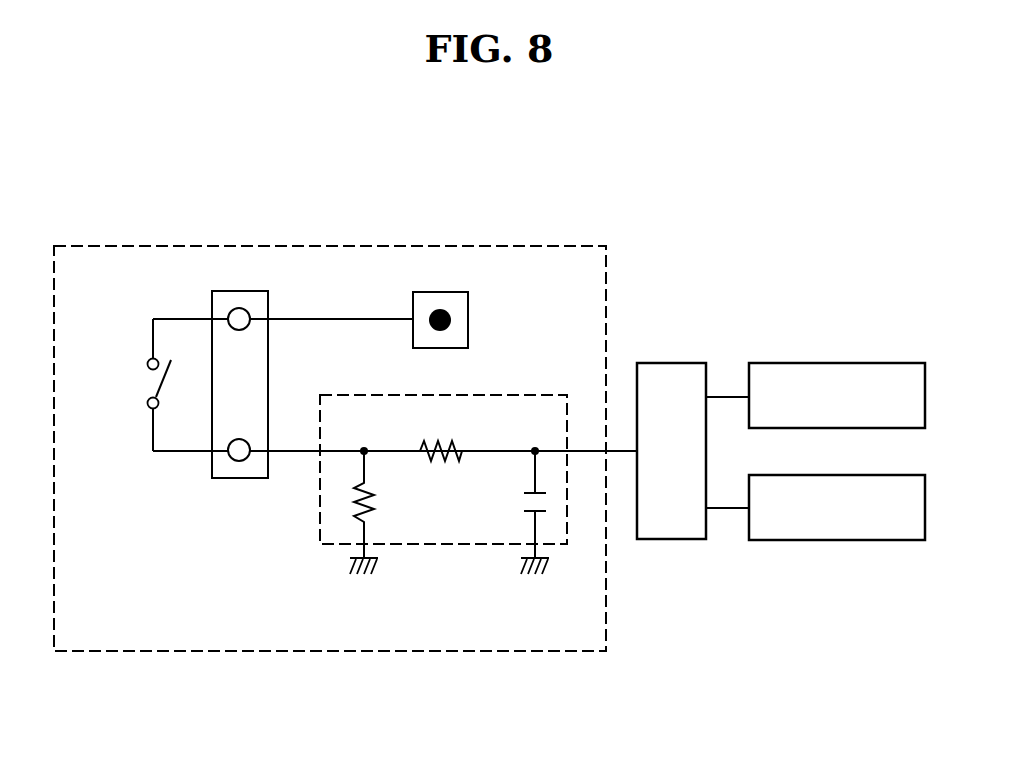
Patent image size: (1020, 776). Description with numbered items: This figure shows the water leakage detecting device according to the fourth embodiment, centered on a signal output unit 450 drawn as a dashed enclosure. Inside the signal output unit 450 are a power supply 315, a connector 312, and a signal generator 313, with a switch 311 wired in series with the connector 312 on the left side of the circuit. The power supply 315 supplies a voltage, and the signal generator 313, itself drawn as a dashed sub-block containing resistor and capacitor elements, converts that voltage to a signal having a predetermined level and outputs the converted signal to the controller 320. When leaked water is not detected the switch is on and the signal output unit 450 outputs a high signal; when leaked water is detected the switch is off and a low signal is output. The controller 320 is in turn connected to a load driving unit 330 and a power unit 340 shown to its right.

The switch 311 is at (147, 384).
The connector 312 is at (240, 478).
The signal generator 313 is at (458, 545).
The power supply 315 is at (470, 320).
The controller 320 is at (673, 540).
The load driving unit 330 is at (871, 372).
The power unit 340 is at (820, 541).
The signal output unit 450 is at (346, 653).